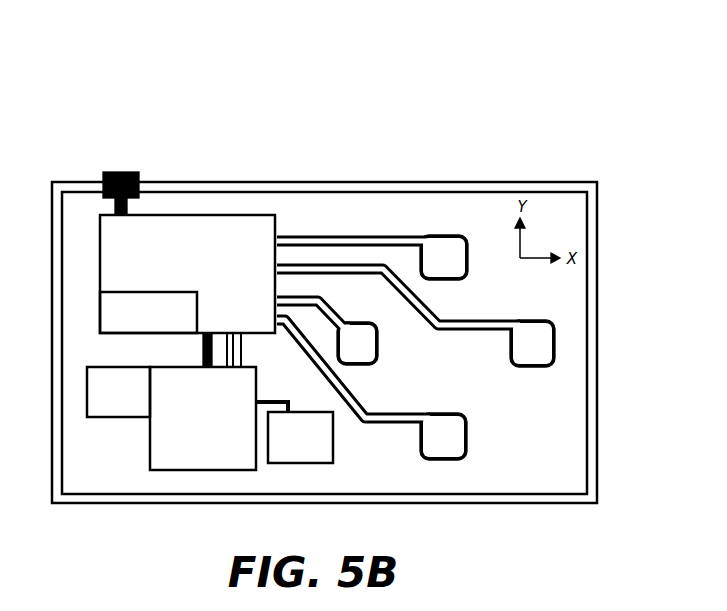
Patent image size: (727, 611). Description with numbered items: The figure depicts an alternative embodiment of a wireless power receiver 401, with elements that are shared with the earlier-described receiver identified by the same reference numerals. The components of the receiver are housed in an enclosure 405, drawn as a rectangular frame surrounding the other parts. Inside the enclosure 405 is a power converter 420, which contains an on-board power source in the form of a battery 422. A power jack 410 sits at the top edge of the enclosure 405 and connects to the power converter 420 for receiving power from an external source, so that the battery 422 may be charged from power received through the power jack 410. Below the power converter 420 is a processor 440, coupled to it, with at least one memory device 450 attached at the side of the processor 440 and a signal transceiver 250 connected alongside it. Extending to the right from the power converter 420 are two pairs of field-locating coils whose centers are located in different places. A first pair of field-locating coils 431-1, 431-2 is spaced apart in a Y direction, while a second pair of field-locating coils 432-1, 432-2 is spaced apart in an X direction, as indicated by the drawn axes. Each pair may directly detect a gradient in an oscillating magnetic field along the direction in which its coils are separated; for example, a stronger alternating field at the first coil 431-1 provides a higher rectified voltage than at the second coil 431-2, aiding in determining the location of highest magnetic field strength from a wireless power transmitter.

The wireless power receiver 401 is at (180, 108).
The enclosure 405 is at (375, 182).
The power jack 410 is at (120, 170).
The power converter 420 is at (187, 274).
The battery 422 is at (148, 312).
The first field-locating coil 431-1 is at (462, 453).
The second field-locating coil 431-2 is at (450, 233).
The field-locating coil of second pair 432-1 is at (378, 330).
The field-locating coil of second pair 432-2 is at (548, 367).
The processor 440 is at (203, 418).
The memory device 450 is at (118, 392).
The signal transceiver 250 is at (294, 432).